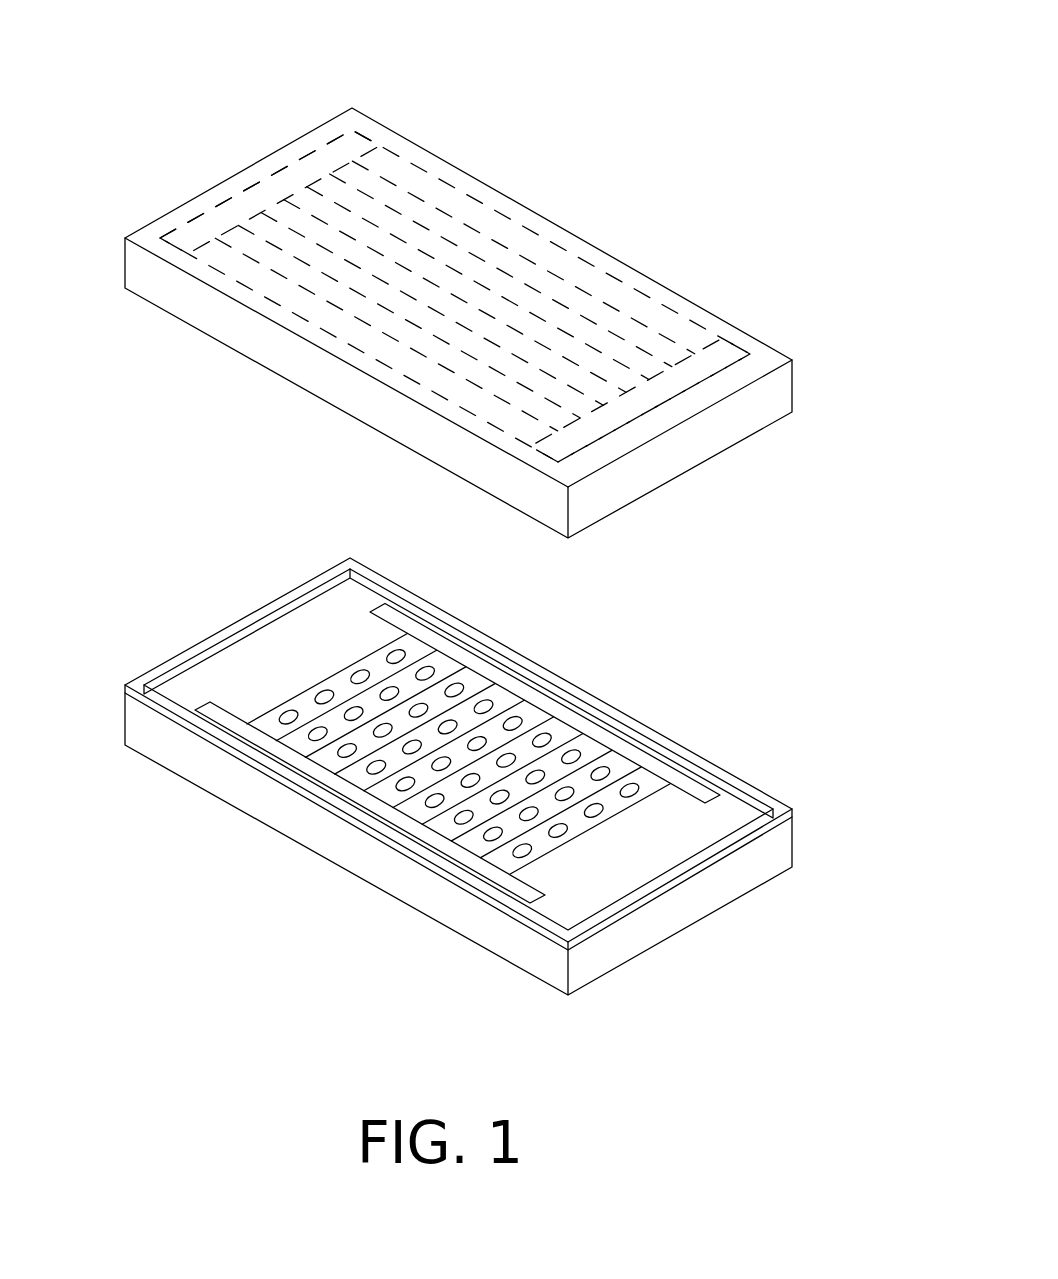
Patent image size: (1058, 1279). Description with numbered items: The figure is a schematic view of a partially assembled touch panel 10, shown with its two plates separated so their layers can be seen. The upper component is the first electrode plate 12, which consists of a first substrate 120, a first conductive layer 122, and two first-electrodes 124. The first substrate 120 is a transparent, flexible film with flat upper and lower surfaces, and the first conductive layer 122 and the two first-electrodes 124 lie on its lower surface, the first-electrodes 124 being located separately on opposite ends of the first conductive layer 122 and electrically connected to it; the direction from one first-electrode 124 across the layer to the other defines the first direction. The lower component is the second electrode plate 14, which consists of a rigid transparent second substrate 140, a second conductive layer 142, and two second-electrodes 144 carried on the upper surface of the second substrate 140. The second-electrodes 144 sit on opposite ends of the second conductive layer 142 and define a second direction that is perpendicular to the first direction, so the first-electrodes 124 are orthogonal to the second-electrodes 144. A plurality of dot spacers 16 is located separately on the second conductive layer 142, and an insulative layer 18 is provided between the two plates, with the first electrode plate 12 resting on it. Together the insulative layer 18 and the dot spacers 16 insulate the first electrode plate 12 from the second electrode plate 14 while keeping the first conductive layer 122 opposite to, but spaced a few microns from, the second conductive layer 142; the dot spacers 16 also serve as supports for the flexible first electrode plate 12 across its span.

The touch panel 10 is at (468, 35).
The first electrode plate 12 is at (692, 268).
The first substrate 120 is at (773, 392).
The first conductive layer 122 is at (471, 240).
The first-electrodes 124 is at (273, 187).
The second electrode plate 14 is at (665, 967).
The second substrate 140 is at (415, 893).
The second conductive layer 142 is at (322, 680).
The second-electrodes 144 is at (515, 687).
The dot spacers 16 is at (631, 788).
The insulative layer 18 is at (328, 803).